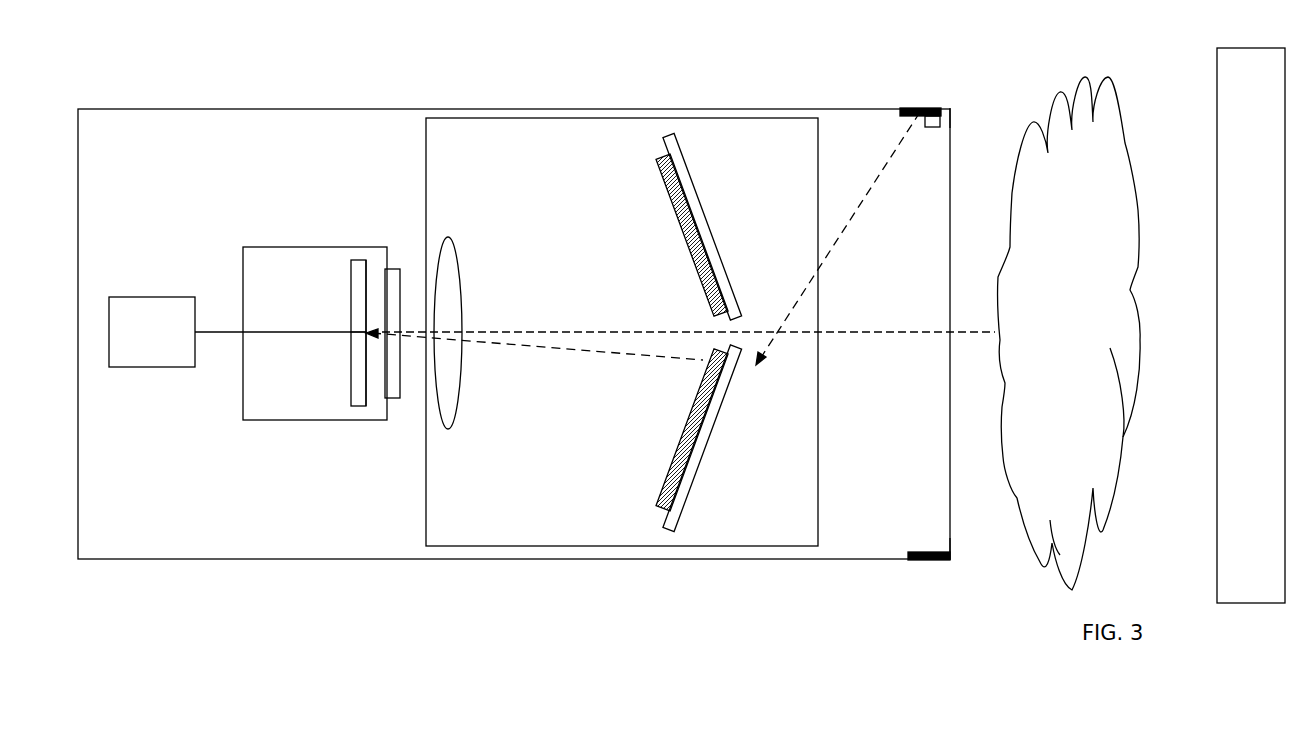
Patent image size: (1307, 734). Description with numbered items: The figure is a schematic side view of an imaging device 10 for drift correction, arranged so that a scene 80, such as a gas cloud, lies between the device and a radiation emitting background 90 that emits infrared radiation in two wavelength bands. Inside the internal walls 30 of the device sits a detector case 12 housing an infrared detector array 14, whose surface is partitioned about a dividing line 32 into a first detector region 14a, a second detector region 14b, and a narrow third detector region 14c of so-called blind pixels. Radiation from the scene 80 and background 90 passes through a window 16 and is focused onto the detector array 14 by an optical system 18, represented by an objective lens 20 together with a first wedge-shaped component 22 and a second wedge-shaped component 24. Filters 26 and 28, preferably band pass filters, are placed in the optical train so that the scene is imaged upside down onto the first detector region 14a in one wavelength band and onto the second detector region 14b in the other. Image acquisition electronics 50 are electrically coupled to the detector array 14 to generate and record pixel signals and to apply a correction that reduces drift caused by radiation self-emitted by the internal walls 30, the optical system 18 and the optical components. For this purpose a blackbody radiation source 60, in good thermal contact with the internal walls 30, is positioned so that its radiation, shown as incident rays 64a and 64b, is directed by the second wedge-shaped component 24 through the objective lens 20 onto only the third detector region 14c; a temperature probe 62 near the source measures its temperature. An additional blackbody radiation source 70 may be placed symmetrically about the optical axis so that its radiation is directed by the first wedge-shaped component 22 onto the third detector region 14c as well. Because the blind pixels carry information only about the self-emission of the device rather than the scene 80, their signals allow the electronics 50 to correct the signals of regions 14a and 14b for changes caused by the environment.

The imaging device 10 is at (514, 330).
The detector case 12 is at (316, 247).
The infrared detector array 14 is at (308, 380).
The first detector region 14a is at (351, 372).
The second detector region 14b is at (353, 290).
The third detector region 14c is at (360, 325).
The window 16 is at (393, 268).
The optical system 18 is at (620, 546).
The objective lens 20 is at (448, 430).
The first wedge-shaped component 22 is at (717, 213).
The second wedge-shaped component 24 is at (725, 437).
The filter 26 is at (681, 246).
The filter 28 is at (679, 432).
The internal walls 30 is at (514, 108).
The dividing line 32 is at (916, 332).
The image acquisition electronics 50 is at (230, 332).
The blackbody radiation source 60 is at (925, 110).
The temperature probe 62 is at (938, 127).
The incident ray 64a is at (875, 180).
The incident ray 64b is at (606, 352).
The additional blackbody radiation source 70 is at (922, 560).
The scene 80 is at (1070, 445).
The radiation emitting background 90 is at (1265, 433).